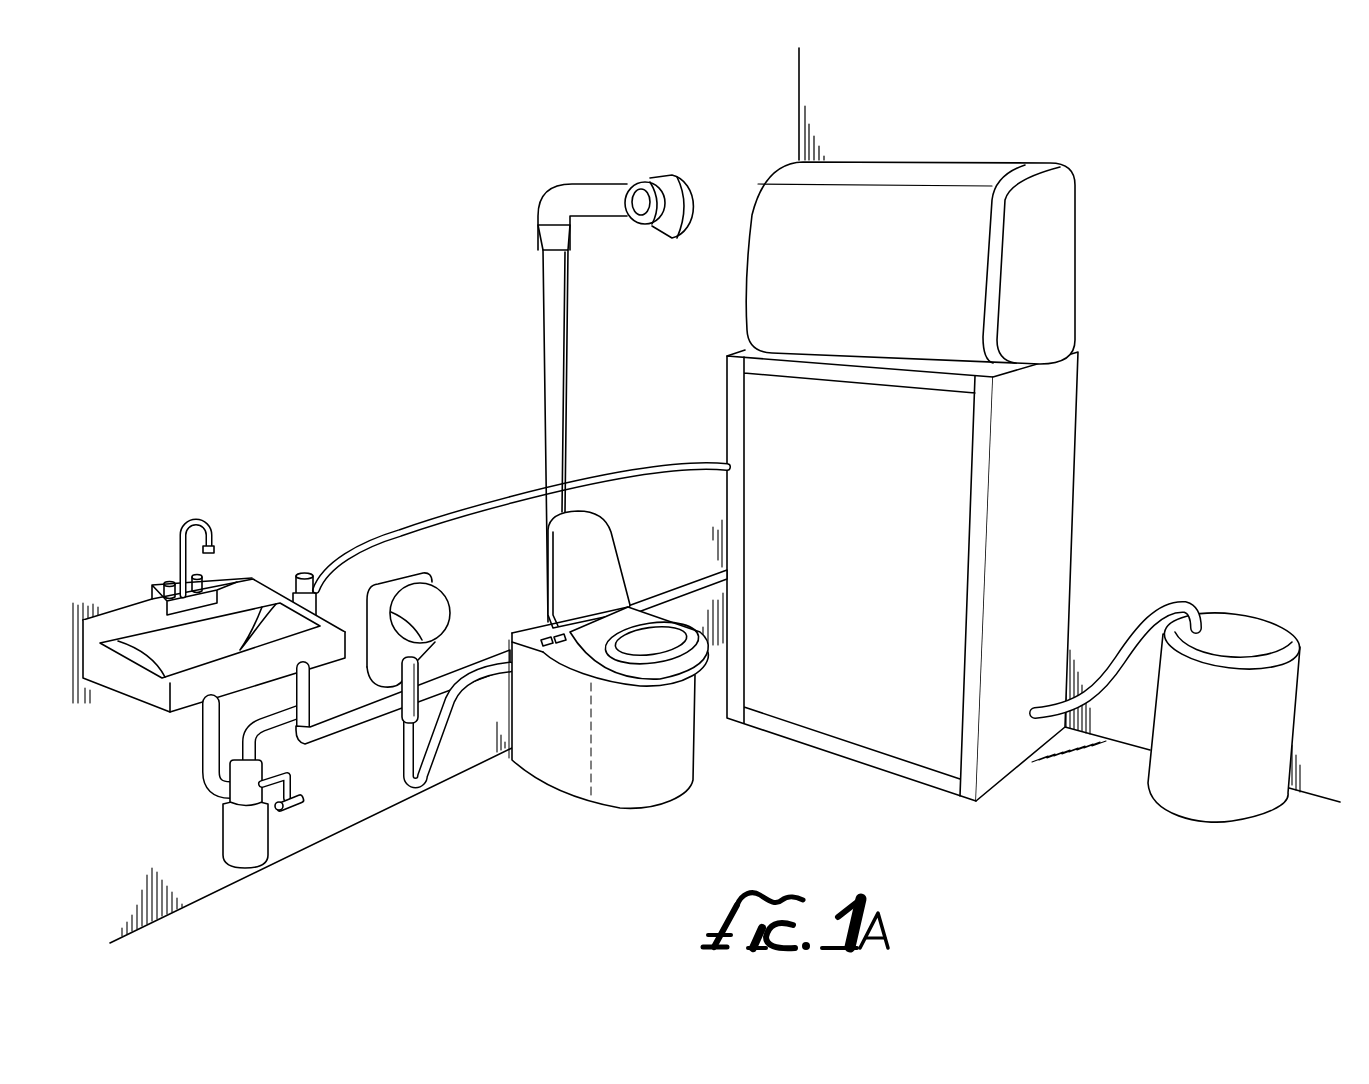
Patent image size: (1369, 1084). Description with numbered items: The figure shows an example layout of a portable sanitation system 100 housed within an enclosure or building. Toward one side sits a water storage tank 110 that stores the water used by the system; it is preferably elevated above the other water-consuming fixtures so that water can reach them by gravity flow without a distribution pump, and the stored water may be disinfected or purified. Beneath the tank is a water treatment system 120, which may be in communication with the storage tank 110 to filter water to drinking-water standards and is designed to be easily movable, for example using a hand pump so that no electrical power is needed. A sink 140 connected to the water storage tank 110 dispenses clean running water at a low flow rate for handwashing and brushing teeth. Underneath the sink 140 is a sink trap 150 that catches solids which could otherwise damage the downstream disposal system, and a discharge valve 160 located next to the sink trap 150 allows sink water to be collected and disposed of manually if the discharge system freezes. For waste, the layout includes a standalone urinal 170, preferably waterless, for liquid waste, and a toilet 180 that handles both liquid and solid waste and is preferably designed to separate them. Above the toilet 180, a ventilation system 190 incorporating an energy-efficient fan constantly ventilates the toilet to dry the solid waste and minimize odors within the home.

The portable sanitation system 100 is at (706, 495).
The water storage tank 110 is at (878, 283).
The water treatment system 120 is at (981, 638).
The sink 140 is at (131, 597).
The sink trap 150 is at (238, 834).
The discharge valve 160 is at (307, 810).
The urinal 170 is at (440, 578).
The toilet 180 is at (643, 585).
The ventilation system 190 is at (611, 233).